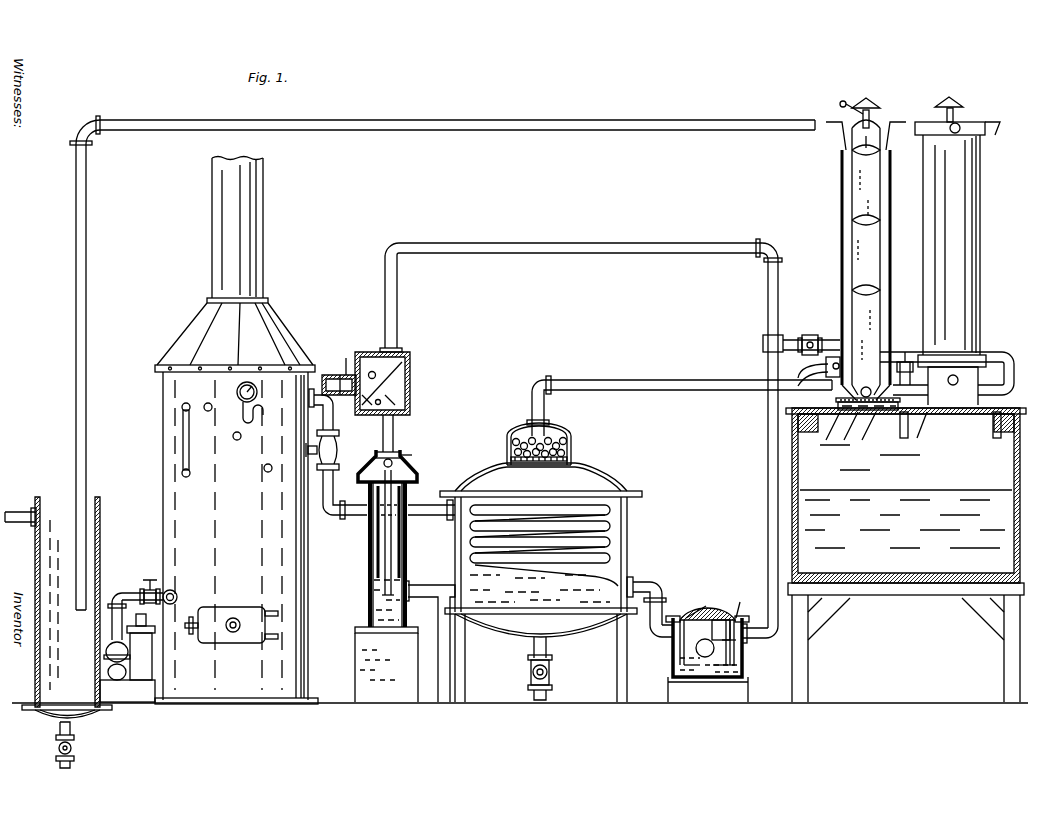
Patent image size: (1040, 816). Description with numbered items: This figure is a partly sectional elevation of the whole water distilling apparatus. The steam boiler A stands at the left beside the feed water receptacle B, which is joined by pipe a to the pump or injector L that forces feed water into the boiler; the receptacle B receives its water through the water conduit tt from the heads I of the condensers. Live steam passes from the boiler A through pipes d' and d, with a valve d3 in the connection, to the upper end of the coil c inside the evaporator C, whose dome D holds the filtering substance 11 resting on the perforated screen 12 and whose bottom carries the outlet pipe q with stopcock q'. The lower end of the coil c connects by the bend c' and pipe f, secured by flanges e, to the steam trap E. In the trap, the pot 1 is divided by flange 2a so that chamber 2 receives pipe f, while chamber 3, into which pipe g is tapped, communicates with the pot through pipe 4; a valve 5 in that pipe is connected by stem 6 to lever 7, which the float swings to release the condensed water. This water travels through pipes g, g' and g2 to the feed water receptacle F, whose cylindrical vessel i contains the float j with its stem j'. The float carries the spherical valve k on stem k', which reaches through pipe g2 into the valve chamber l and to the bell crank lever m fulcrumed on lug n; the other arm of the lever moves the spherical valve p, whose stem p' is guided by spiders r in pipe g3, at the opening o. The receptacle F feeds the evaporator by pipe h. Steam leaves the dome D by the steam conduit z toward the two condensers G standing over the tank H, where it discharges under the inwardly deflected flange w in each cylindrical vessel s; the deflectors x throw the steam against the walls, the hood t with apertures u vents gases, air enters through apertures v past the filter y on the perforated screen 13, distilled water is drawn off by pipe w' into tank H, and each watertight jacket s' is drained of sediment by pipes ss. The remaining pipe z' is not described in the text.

The water conduit tt is at (758, 120).
The steam conduit z is at (18, 527).
The feed water receptacle B is at (100, 543).
The pump or injector L is at (127, 658).
The pipe a is at (112, 622).
The valve b is at (149, 584).
The steam boiler A is at (236, 431).
The pipe d' is at (321, 402).
The valve d3 is at (338, 447).
The pipe d is at (379, 504).
The pipe g3 is at (338, 372).
The stem p' is at (354, 356).
The bell crank lever m is at (410, 384).
The opening o is at (371, 362).
The spiders r is at (382, 383).
The valve chamber l is at (392, 388).
The spherical valve p is at (357, 406).
The lug n is at (375, 404).
The pipe g2 is at (397, 328).
The spherical valve k is at (398, 460).
The stem k' is at (423, 442).
The feed water receptacle F is at (369, 561).
The cylindrical vessel i is at (369, 547).
The stem j' is at (401, 532).
The float j is at (371, 599).
The pipe h is at (430, 585).
The evaporator C is at (541, 582).
The coil c is at (540, 519).
The bend c' is at (546, 582).
The flanges e is at (646, 591).
The pipe f is at (660, 612).
The outlet pipe q is at (551, 648).
The stopcock q' is at (554, 680).
The steam dome D is at (545, 426).
The filtering substance 11 is at (562, 441).
The perforated screen 12 is at (570, 459).
The pipe z' is at (679, 406).
The pipe g' is at (591, 428).
The steam trap E is at (742, 660).
The pot 1 is at (722, 625).
The valve 5 is at (733, 625).
The chamber 3 is at (737, 632).
The pipe 4 is at (740, 648).
The stem 6 is at (740, 640).
The lever 7 is at (736, 672).
The chamber 2 is at (676, 640).
The flange 2a is at (678, 662).
The pipe g is at (745, 586).
The tank H is at (906, 555).
The condensers G is at (906, 263).
The cylindrical vessel s is at (866, 257).
The watertight jacket s' is at (830, 314).
The deflectors x is at (864, 144).
The hood t is at (958, 108).
The apertures u is at (847, 105).
The heads I is at (834, 124).
The filter y is at (834, 401).
The apertures v is at (864, 414).
The perforated screen 13 is at (847, 427).
The inwardly deflected flange w is at (827, 359).
The pipe w' is at (913, 358).
The pipes ss is at (1008, 360).